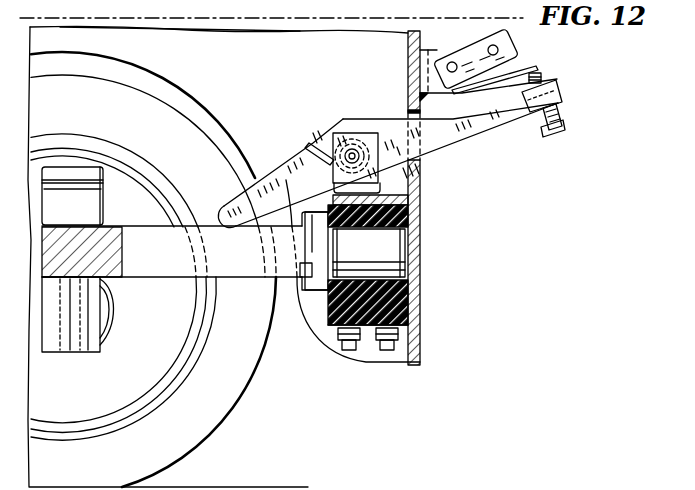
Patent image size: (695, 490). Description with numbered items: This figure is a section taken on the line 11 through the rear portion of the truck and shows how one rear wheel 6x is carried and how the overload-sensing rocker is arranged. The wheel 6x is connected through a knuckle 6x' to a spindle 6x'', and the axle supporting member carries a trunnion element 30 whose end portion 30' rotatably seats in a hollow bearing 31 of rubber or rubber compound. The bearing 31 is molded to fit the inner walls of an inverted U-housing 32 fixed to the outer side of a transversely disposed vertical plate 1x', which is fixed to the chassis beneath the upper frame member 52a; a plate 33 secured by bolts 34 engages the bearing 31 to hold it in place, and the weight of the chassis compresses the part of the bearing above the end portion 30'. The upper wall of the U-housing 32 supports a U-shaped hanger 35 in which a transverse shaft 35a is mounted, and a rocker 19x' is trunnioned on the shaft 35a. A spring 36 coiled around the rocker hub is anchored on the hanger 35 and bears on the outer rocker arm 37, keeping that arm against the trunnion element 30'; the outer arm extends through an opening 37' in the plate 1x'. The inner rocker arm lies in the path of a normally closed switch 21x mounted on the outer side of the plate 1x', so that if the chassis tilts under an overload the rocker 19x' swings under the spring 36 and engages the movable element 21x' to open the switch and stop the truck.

The section line 11 is at (20, 18).
The frame member 52a is at (231, 15).
The rear wheels 6x is at (153, 269).
The knuckles 6x' is at (71, 337).
The spindles 6x'' is at (101, 286).
The trunnion element 30 is at (185, 267).
The trunnion end portion 30' is at (387, 251).
The hollow bearing 31 is at (420, 292).
The U-housing 32 is at (420, 203).
The plate 33 is at (374, 322).
The bolts 34 is at (338, 340).
The vertical plate 1x' is at (439, 198).
The U-shaped hanger 35 is at (375, 133).
The shaft 35a is at (352, 140).
The spring 36 is at (327, 148).
The outer rocker arm 37 is at (268, 173).
The opening 37' is at (436, 158).
The rocker 19x' is at (400, 149).
The switch 21x is at (501, 61).
The movable element 21x' is at (540, 80).